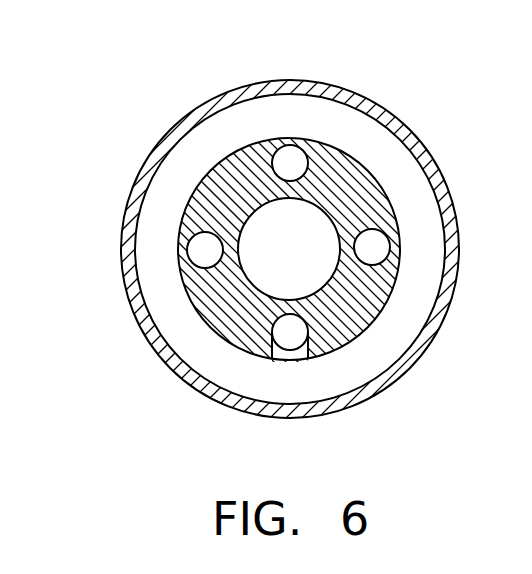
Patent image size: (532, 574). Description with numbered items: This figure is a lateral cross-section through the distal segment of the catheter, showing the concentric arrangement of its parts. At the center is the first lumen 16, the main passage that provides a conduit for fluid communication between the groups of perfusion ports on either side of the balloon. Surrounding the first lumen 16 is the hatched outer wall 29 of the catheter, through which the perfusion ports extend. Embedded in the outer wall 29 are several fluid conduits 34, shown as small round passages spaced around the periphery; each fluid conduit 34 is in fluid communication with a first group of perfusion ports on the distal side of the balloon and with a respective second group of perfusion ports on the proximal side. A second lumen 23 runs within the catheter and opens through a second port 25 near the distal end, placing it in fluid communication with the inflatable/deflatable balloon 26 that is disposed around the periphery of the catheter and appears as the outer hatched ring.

The first lumen 16 is at (260, 232).
The second lumen 23 is at (235, 342).
The second port 25 is at (294, 362).
The inflatable/deflatable balloon 26 is at (372, 98).
The outer wall 29 is at (385, 183).
The fluid conduit 34 is at (290, 163).